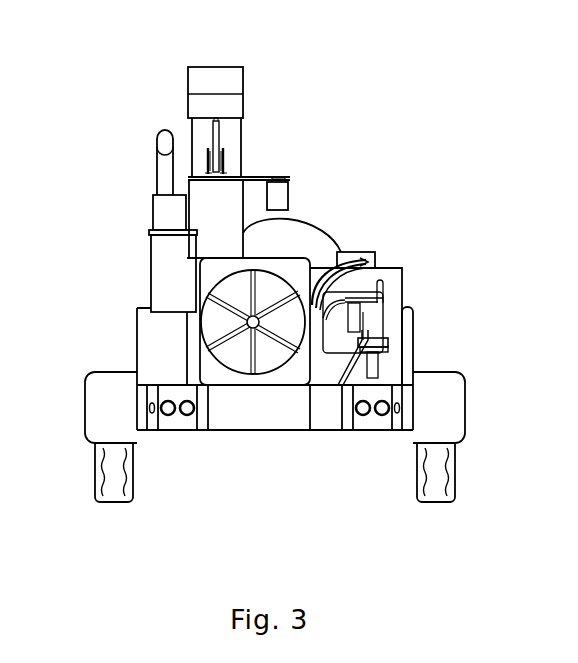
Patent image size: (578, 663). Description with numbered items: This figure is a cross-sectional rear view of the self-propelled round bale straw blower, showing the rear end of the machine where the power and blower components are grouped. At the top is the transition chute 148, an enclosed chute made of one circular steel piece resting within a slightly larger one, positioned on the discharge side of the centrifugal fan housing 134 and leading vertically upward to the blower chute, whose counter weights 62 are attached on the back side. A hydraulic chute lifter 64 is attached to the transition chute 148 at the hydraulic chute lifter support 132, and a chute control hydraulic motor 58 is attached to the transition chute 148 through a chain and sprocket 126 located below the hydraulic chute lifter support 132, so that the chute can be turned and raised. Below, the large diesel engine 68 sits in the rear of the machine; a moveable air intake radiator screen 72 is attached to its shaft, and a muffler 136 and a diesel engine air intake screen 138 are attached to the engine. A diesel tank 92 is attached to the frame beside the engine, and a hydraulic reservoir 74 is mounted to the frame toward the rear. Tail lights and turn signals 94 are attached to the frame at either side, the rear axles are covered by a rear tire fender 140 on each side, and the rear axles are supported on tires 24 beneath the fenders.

The tires 24 is at (108, 478).
The chute control hydraulic motor 58 is at (290, 205).
The counter weights 62 is at (216, 66).
The hydraulic chute lifter 64 is at (219, 136).
The diesel engine 68 is at (323, 238).
The moveable air intake radiator screen 72 is at (233, 373).
The hydraulic reservoir 74 is at (385, 312).
The diesel tank 92 is at (137, 340).
The tail lights and turn signals 94 is at (167, 417).
The chain and sprocket 126 is at (262, 176).
The hydraulic chute lifter support 132 is at (192, 157).
The centrifugal fan housing 134 is at (296, 234).
The muffler 136 is at (153, 203).
The diesel engine air intake screen 138 is at (150, 267).
The rear tire fender 140 is at (112, 370).
The transition chute 148 is at (232, 210).